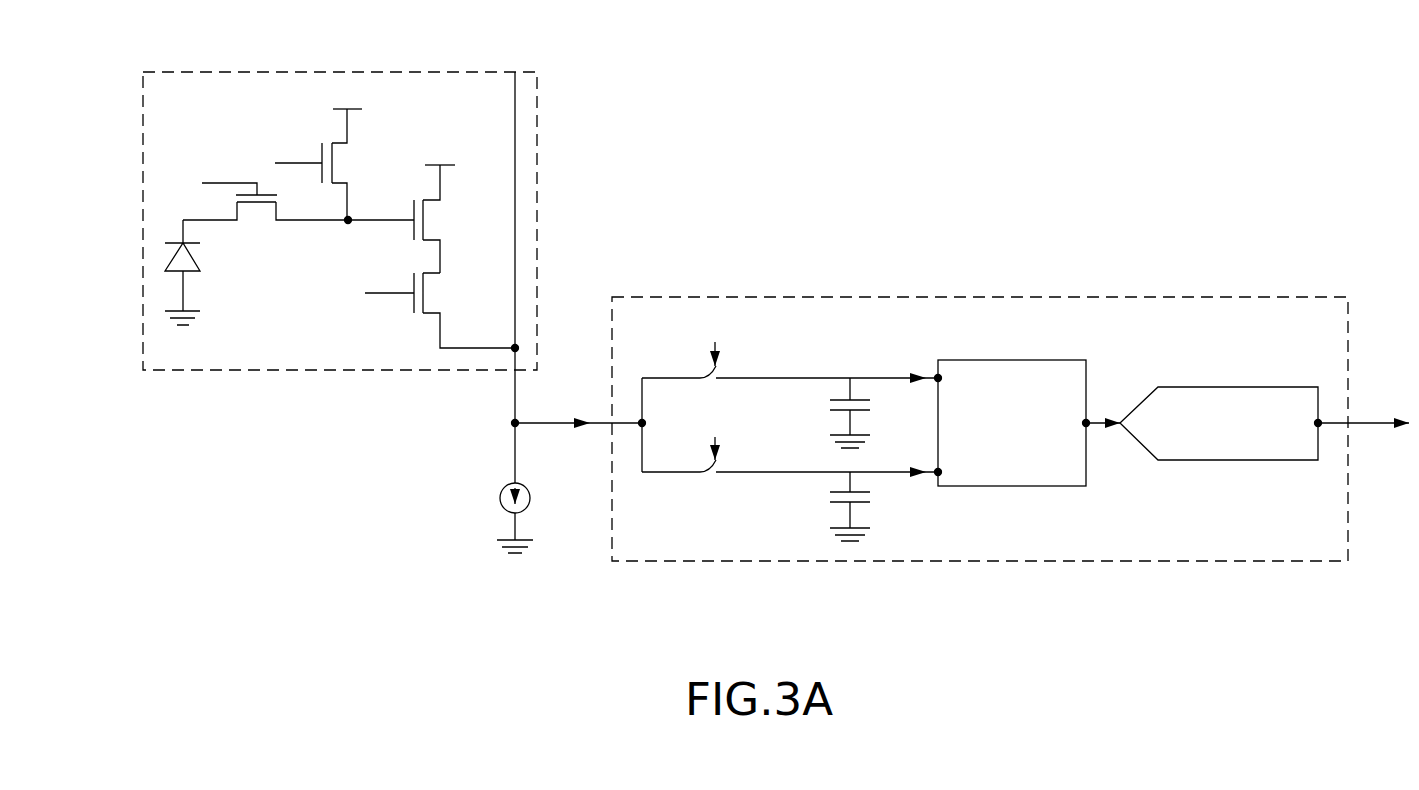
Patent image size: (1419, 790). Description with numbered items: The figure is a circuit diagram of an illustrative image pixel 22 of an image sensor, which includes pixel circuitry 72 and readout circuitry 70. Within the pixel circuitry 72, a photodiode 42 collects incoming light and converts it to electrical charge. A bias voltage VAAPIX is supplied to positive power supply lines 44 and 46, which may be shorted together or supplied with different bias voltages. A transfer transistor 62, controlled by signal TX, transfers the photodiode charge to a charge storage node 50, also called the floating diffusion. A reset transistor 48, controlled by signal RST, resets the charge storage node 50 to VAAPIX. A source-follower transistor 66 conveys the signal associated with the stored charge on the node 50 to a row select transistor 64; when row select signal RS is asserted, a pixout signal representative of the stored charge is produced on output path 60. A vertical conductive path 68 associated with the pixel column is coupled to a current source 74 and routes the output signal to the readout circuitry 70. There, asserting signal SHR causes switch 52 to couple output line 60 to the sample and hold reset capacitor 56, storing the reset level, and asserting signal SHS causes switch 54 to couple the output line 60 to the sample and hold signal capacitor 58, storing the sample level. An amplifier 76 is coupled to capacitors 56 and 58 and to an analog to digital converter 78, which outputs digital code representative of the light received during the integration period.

The image pixel 22 is at (880, 112).
The photodiode 42 is at (170, 278).
The positive power supply line 44 is at (432, 185).
The positive power supply line 46 is at (362, 130).
The reset transistor 48 is at (325, 196).
The charge storage node 50 is at (348, 230).
The switch 52 is at (726, 372).
The switch 54 is at (695, 480).
The sample and hold reset capacitor 56 is at (862, 392).
The sample and hold signal capacitor 58 is at (822, 498).
The output path 60 is at (558, 420).
The transfer transistor 62 is at (256, 223).
The row select transistor 64 is at (440, 290).
The source-follower transistor 66 is at (437, 218).
The vertical conductive path 68 is at (516, 108).
The readout circuitry 70 is at (1261, 297).
The pixel circuitry 72 is at (471, 71).
The current source 74 is at (497, 515).
The amplifier 76 is at (1053, 360).
The analog to digital converter 78 is at (1280, 387).